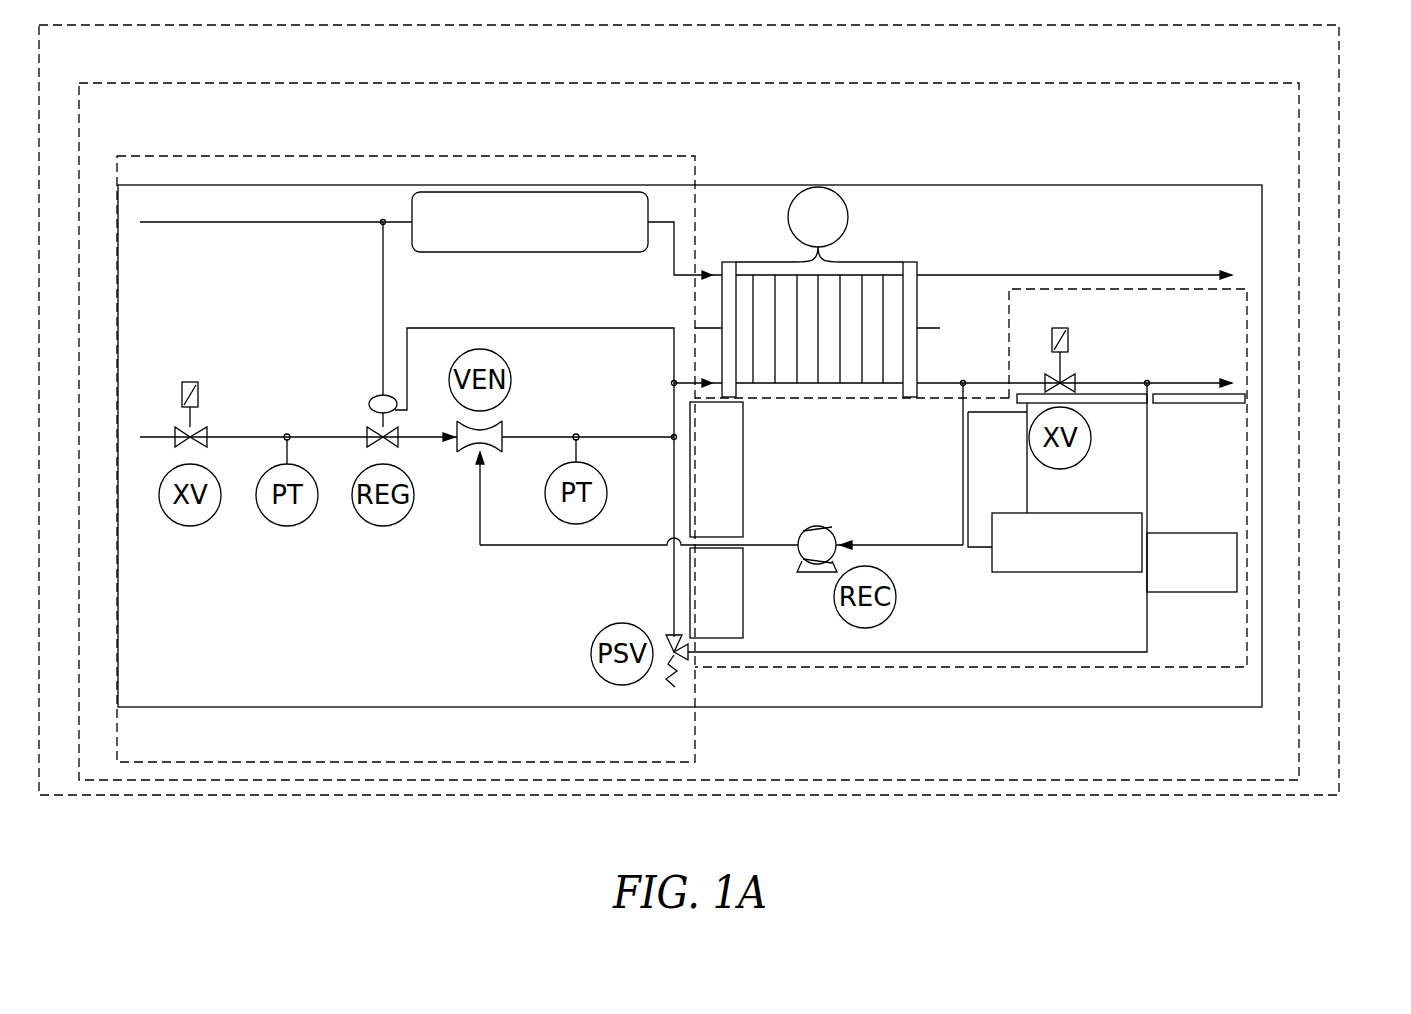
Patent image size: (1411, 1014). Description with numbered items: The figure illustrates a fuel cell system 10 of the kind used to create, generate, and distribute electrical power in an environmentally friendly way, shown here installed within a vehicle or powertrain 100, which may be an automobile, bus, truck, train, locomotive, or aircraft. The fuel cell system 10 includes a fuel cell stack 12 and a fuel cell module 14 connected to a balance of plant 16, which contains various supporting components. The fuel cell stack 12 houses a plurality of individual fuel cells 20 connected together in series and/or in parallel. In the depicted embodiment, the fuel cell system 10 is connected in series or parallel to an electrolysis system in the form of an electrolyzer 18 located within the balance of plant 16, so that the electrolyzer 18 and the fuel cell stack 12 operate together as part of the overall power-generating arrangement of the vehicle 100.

The vehicle 100 is at (1350, 119).
The fuel cell system 10 is at (1312, 209).
The balance of plant 16 is at (448, 146).
The electrolyzer 18 is at (548, 272).
The fuel cell stack 12 is at (826, 245).
The fuel cell module 14 is at (738, 228).
The fuel cell 20 is at (893, 262).